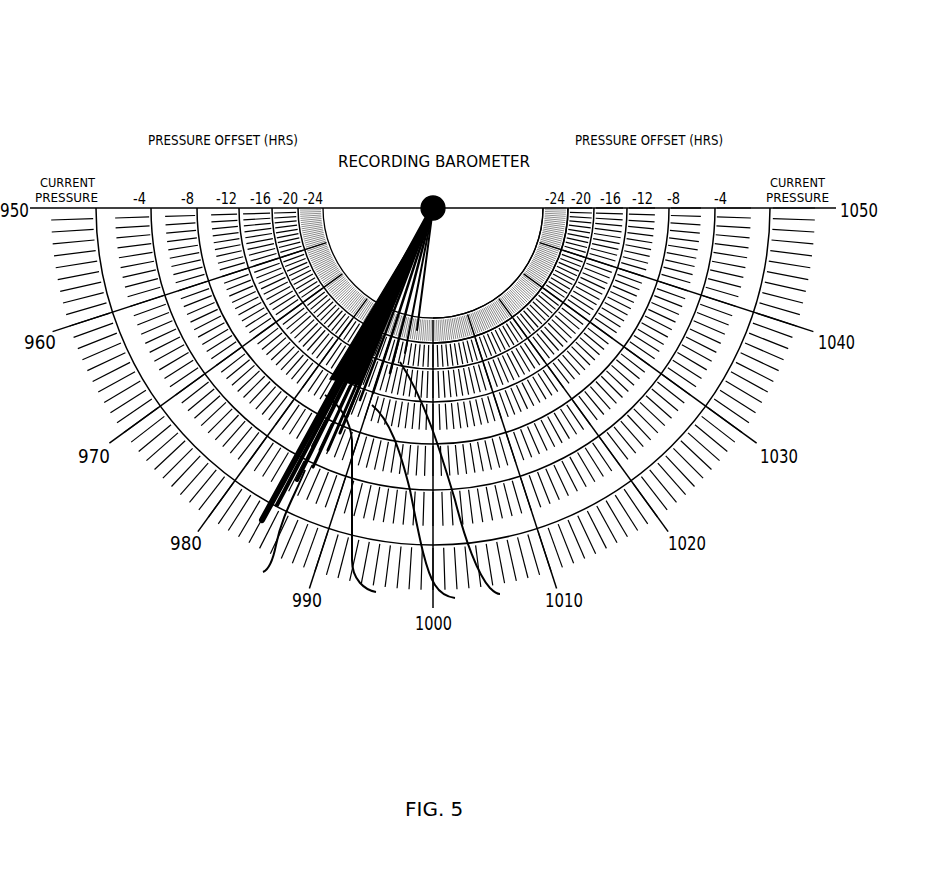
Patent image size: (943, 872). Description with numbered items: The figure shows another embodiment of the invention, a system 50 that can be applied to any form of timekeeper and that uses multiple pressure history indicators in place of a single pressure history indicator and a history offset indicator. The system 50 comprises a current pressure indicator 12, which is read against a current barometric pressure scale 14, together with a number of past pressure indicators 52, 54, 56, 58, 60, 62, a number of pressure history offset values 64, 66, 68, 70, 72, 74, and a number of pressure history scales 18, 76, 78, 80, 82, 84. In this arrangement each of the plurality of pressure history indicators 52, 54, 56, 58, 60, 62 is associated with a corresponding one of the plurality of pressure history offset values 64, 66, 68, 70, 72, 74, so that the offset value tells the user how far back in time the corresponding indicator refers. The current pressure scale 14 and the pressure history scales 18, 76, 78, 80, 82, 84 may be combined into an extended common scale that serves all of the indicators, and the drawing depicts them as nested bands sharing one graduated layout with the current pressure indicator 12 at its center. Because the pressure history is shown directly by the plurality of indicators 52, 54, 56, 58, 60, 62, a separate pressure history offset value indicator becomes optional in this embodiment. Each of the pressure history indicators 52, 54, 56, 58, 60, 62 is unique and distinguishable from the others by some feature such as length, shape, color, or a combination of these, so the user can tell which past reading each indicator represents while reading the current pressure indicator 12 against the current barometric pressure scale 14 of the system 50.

The system 50 is at (127, 54).
The current barometric pressure scale 14 is at (50, 216).
The pressure history scale 18 is at (732, 207).
The pressure history offset value 64 is at (130, 207).
The pressure history offset value 66 is at (180, 207).
The pressure history offset value 68 is at (211, 207).
The pressure history offset value 70 is at (247, 207).
The pressure history offset value 72 is at (275, 207).
The pressure history offset value 74 is at (300, 207).
The pressure history scale 76 is at (690, 207).
The pressure history scale 78 is at (657, 207).
The pressure history scale 80 is at (622, 207).
The pressure history scale 82 is at (588, 207).
The pressure history scale 84 is at (560, 207).
The current pressure indicator 12 is at (262, 522).
The pressure history indicator 52 is at (274, 527).
The pressure history indicator 54 is at (362, 503).
The pressure history indicator 56 is at (425, 508).
The pressure history indicator 58 is at (459, 484).
The pressure history indicator 60 is at (422, 343).
The pressure history indicator 62 is at (420, 313).